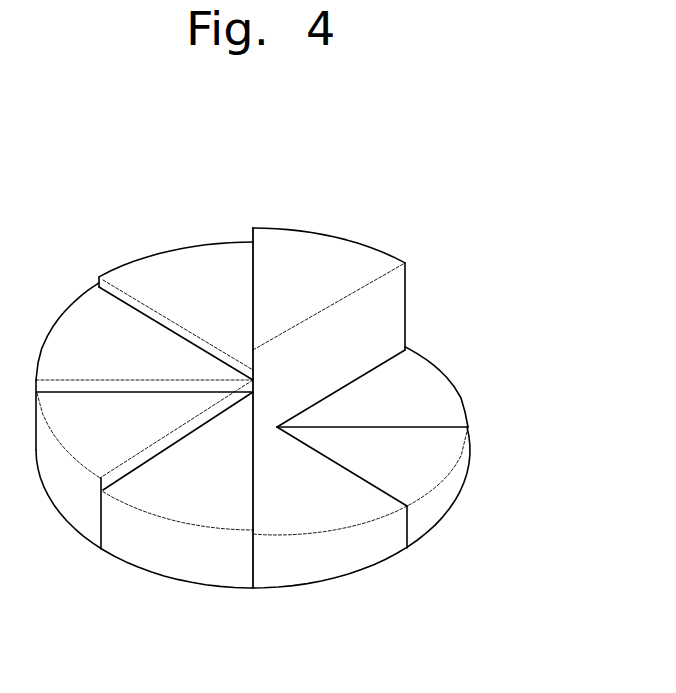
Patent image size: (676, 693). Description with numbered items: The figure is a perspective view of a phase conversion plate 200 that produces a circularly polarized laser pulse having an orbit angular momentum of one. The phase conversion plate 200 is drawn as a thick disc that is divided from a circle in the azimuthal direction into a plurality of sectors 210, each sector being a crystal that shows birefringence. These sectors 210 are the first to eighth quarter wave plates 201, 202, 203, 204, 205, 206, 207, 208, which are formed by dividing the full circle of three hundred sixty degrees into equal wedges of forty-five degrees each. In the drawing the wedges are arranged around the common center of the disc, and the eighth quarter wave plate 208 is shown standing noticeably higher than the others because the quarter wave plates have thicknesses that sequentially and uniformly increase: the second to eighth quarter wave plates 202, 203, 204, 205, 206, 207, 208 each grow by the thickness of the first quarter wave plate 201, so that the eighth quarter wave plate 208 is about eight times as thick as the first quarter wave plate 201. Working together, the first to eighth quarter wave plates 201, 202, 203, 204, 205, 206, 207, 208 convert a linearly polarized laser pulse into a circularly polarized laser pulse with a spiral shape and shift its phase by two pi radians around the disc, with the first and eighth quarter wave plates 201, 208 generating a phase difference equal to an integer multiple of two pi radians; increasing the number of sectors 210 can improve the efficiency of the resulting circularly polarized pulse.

The phase conversion plate 200 is at (463, 181).
The first quarter wave plate 201 is at (408, 408).
The second quarter wave plate 202 is at (408, 465).
The third quarter wave plate 203 is at (326, 500).
The fourth quarter wave plate 204 is at (223, 490).
The fifth quarter wave plate 205 is at (146, 435).
The sixth quarter wave plate 206 is at (136, 354).
The seventh quarter wave plate 207 is at (214, 292).
The eighth quarter wave plate 208 is at (319, 287).
The sectors 210 is at (368, 262).